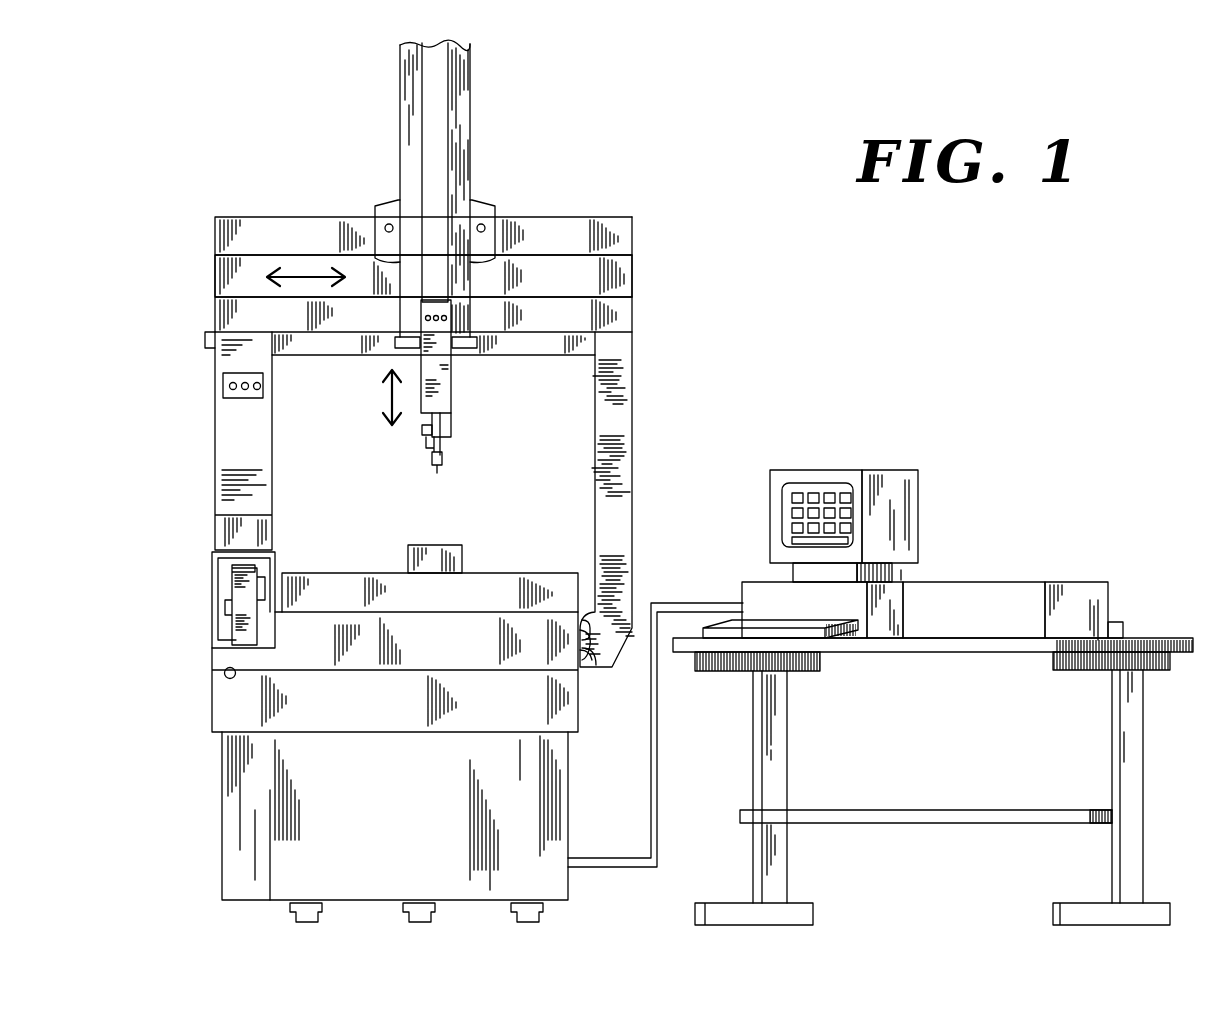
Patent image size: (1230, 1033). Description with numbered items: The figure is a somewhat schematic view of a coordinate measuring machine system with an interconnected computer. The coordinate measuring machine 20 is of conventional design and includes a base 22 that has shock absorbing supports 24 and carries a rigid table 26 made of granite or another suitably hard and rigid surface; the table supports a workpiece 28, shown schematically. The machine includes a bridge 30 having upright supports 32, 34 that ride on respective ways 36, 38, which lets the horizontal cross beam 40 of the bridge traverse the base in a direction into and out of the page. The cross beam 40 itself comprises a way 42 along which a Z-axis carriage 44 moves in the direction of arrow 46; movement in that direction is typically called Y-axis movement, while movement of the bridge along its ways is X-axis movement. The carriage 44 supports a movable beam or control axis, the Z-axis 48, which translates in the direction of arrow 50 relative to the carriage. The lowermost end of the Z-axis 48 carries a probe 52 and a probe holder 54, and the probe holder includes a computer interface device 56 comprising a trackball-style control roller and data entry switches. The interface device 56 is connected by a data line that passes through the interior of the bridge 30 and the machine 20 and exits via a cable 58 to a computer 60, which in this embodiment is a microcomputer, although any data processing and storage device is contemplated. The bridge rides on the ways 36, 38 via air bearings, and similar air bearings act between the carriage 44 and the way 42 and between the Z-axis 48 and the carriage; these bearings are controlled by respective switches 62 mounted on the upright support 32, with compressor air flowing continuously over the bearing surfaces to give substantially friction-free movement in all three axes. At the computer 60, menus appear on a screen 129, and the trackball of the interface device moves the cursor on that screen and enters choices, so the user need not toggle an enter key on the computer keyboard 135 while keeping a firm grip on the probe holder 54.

The coordinate measuring machine 20 is at (658, 442).
The base 22 is at (404, 814).
The shock absorbing supports 24 is at (322, 906).
The rigid table 26 is at (478, 592).
The workpiece 28 is at (432, 560).
The bridge 30 is at (470, 259).
The upright support 32 is at (210, 441).
The upright support 34 is at (617, 483).
The way 36 is at (240, 598).
The way 38 is at (598, 672).
The horizontal cross beam 40 is at (459, 247).
The way 42 is at (640, 315).
The Z-axis carriage 44 is at (472, 104).
The arrow 46 is at (307, 274).
The Z-axis 48 is at (440, 402).
The arrow 50 is at (385, 398).
The probe 52 is at (428, 462).
The probe holder 54 is at (451, 428).
The computer interface device 56 is at (420, 428).
The cable 58 is at (622, 858).
The computer 60 is at (932, 541).
The switches 62 is at (222, 386).
The screen 129 is at (820, 485).
The computer keyboard 135 is at (803, 634).